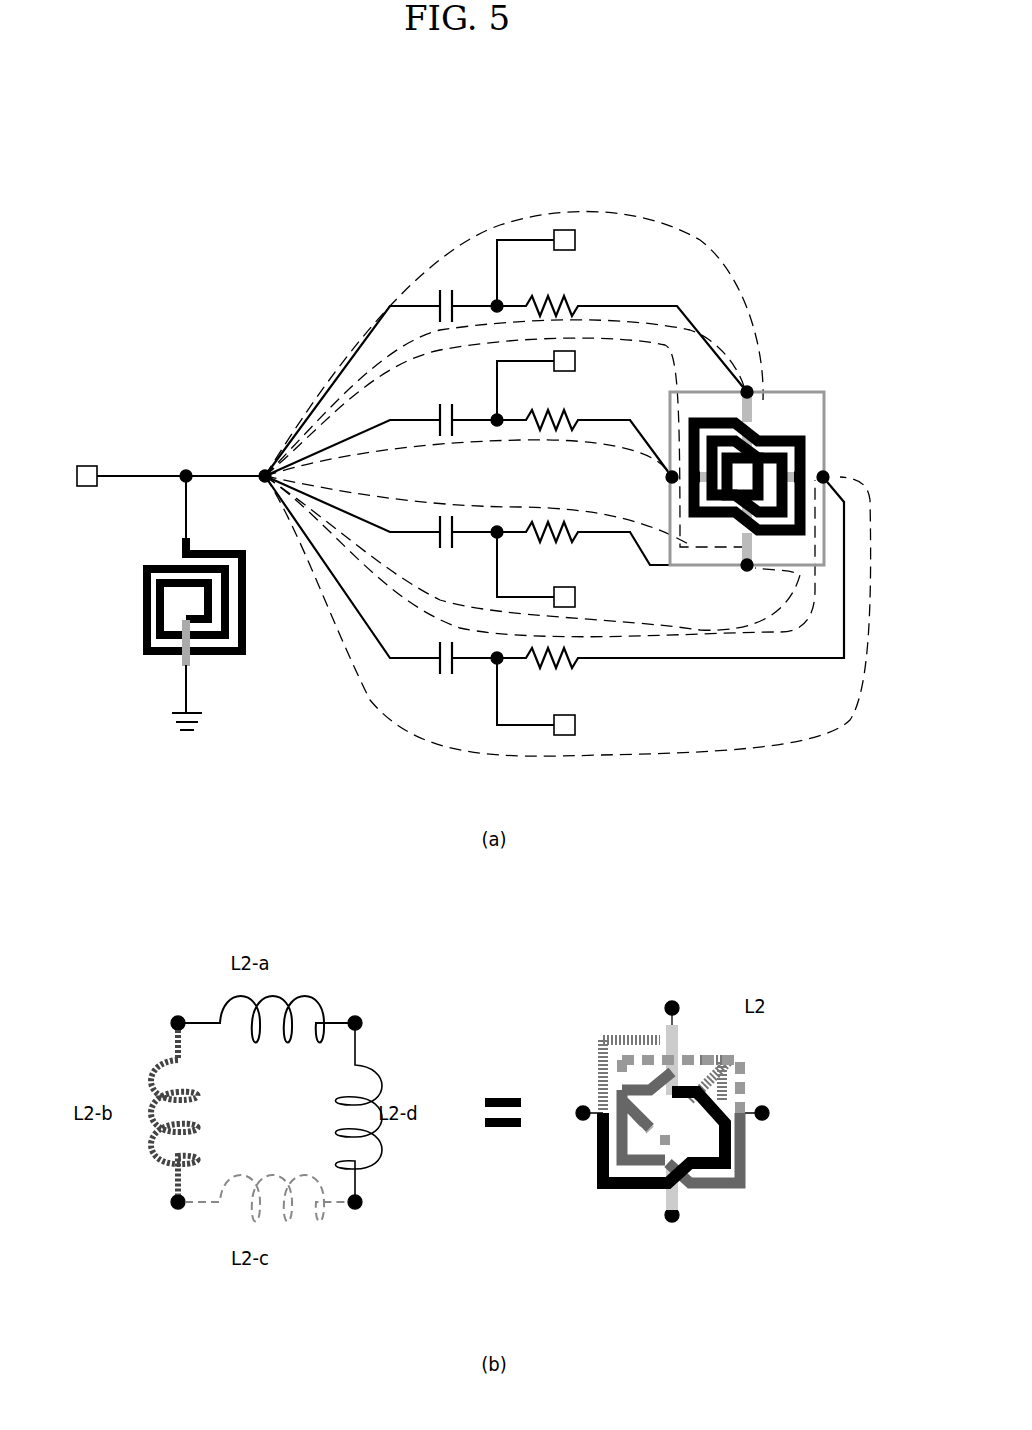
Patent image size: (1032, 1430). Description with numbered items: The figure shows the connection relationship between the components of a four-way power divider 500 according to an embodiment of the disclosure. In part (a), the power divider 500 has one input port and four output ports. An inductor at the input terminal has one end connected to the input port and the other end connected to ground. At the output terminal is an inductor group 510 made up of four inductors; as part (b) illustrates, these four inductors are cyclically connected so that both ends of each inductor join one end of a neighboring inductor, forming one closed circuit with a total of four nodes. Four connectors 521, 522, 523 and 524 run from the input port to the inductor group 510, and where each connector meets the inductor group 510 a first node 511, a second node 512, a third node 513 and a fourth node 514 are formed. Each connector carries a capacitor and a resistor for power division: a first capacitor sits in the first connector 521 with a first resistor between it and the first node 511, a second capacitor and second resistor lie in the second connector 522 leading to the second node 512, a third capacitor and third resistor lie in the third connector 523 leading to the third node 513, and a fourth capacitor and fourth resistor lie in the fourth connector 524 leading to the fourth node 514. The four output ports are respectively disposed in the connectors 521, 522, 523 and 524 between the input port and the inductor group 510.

The four-way power divider 500 is at (560, 153).
The inductor group 510 is at (826, 396).
The first node 511 is at (755, 384).
The second node 512 is at (665, 478).
The third node 513 is at (752, 572).
The fourth node 514 is at (826, 472).
The first connector 521 is at (312, 374).
The second connector 522 is at (346, 418).
The third connector 523 is at (368, 537).
The fourth connector 524 is at (366, 685).